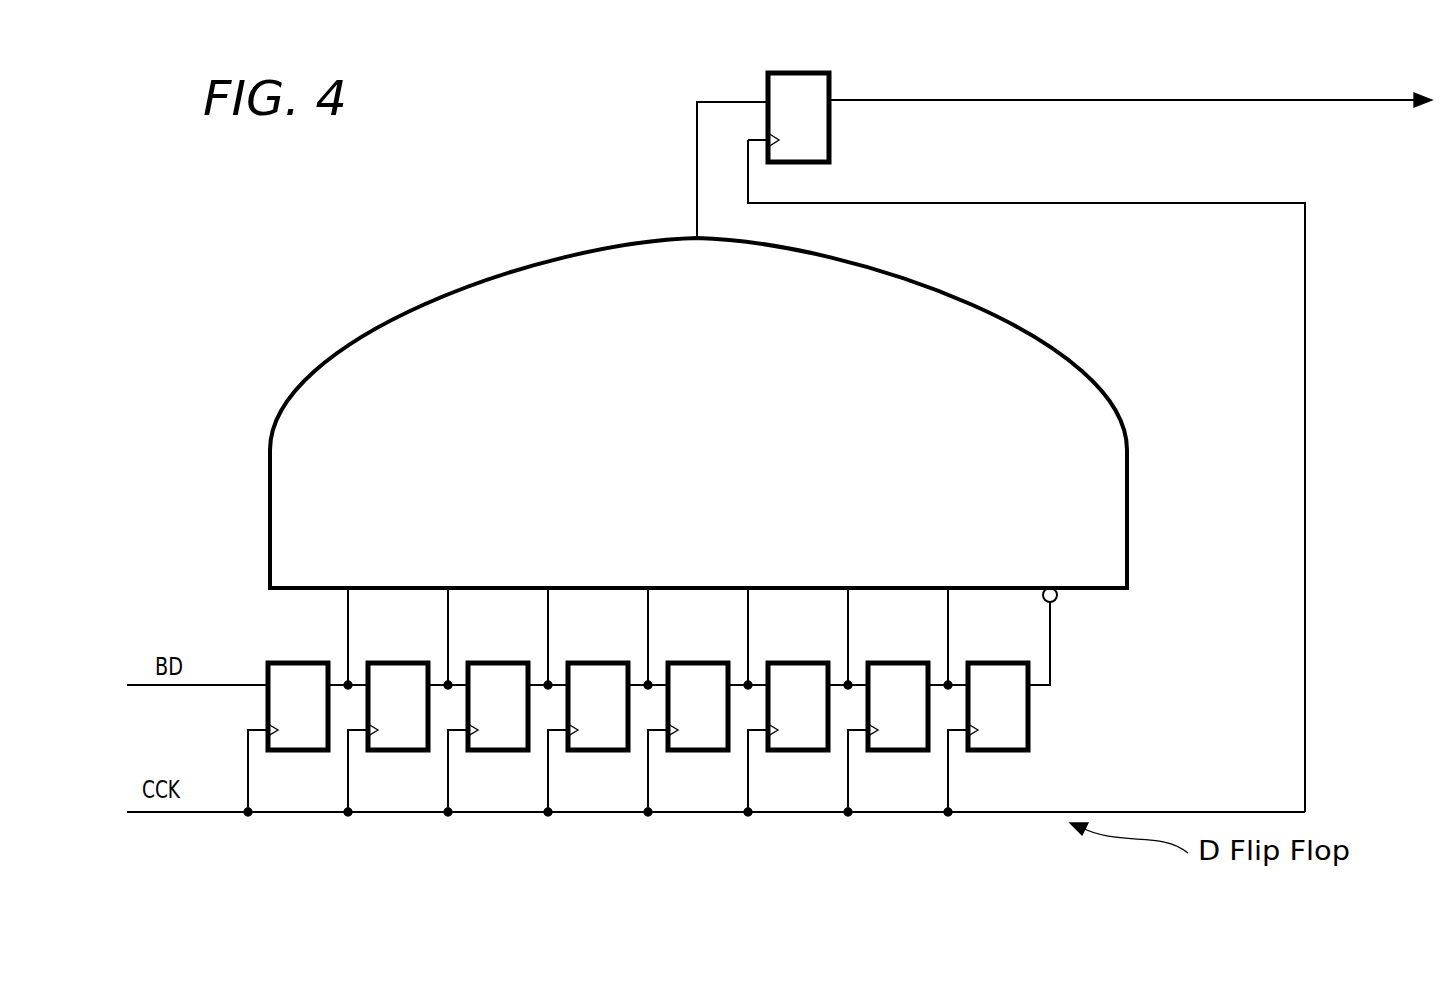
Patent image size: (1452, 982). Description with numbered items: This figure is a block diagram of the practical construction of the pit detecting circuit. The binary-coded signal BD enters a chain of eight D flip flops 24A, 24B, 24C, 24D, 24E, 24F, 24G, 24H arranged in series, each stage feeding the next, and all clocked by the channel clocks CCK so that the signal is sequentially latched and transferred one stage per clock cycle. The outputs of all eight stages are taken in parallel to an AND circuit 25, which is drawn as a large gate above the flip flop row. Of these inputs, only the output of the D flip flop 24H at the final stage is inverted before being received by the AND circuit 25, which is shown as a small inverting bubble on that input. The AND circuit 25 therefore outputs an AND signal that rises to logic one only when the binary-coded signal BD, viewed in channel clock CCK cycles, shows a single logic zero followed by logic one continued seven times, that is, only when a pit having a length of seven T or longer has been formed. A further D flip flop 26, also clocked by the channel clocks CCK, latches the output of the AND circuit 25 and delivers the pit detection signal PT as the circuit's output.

The D flip flop 24A is at (298, 752).
The D flip flop 24B is at (398, 752).
The D flip flop 24C is at (498, 752).
The D flip flop 24D is at (598, 752).
The D flip flop 24E is at (698, 752).
The D flip flop 24F is at (798, 752).
The D flip flop 24G is at (898, 752).
The D flip flop 24H is at (998, 752).
The AND circuit 25 is at (1037, 328).
The D flip flop 26 is at (829, 146).